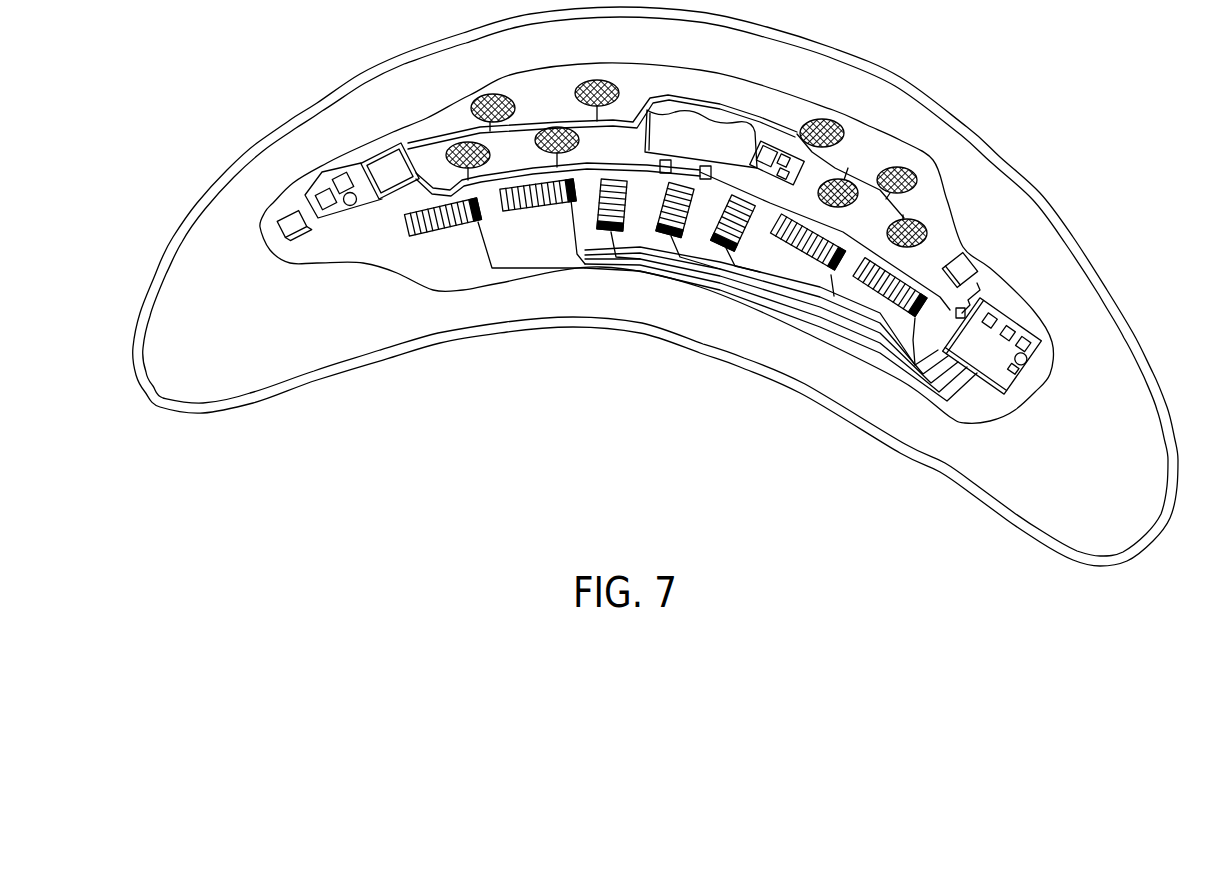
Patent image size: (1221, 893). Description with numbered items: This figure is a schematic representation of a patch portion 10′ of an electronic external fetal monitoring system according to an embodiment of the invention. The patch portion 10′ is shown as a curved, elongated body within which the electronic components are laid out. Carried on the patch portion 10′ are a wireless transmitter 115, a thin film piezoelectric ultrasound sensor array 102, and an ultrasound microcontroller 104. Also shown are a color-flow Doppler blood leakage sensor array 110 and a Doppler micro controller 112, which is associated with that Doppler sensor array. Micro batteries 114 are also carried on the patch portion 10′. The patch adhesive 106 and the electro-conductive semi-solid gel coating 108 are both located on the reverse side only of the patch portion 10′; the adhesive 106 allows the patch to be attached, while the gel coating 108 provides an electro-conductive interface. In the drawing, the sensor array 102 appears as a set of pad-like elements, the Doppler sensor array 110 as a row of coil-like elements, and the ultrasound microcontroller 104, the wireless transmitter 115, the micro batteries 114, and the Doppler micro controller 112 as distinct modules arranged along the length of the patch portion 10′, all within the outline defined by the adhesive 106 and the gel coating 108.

The patch portion 10′ is at (903, 77).
The thin film piezoelectric ultrasound sensor array 102 is at (598, 90).
The ultrasound microcontroller 104 is at (386, 166).
The patch adhesive 106 is at (203, 353).
The electro-conductive semi-solid gel coating 108 is at (336, 244).
The color-flow Doppler blood leakage sensor array 110 is at (737, 247).
The Doppler micro controller 112 is at (986, 353).
The micro batteries 114 is at (963, 266).
The wireless transmitter 115 is at (698, 130).